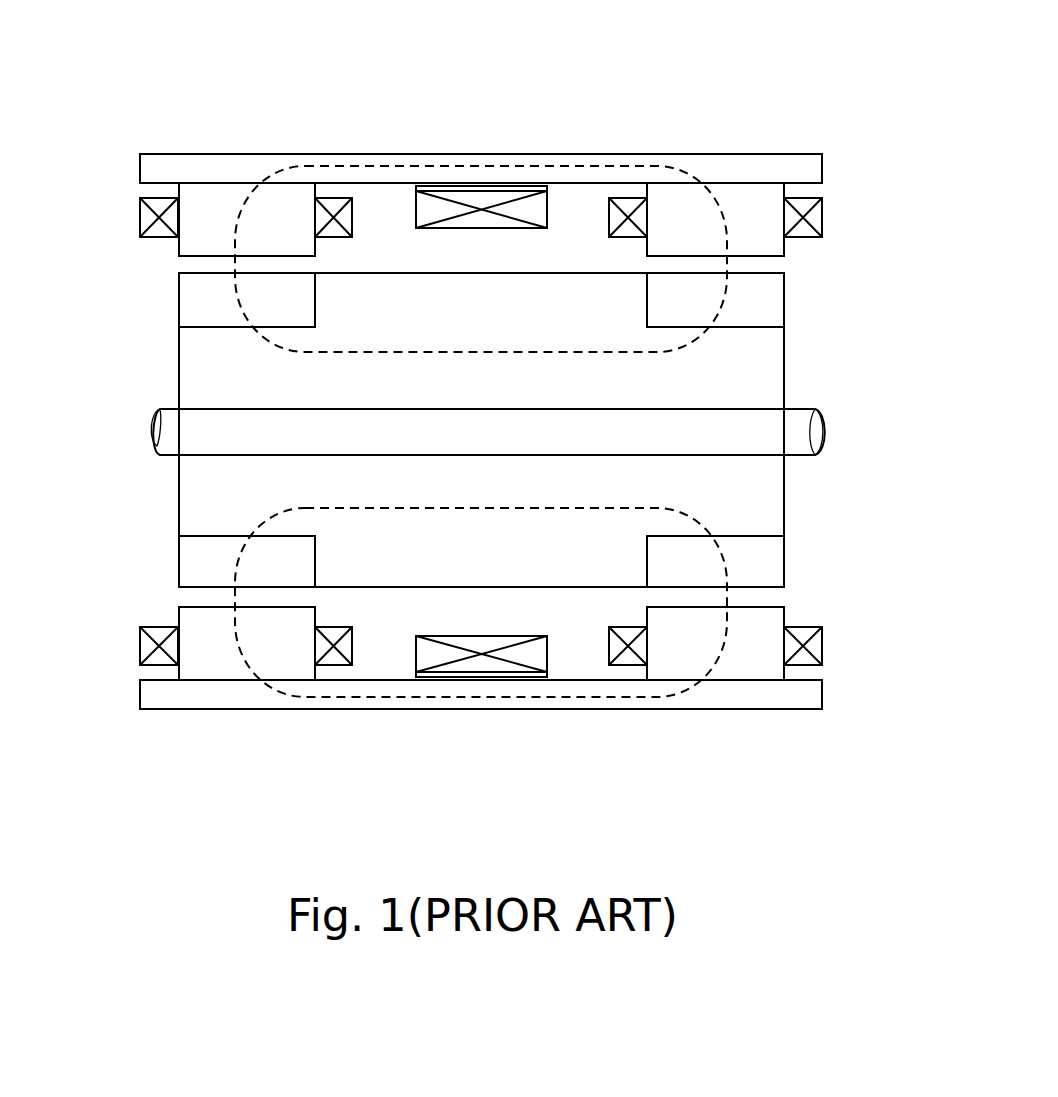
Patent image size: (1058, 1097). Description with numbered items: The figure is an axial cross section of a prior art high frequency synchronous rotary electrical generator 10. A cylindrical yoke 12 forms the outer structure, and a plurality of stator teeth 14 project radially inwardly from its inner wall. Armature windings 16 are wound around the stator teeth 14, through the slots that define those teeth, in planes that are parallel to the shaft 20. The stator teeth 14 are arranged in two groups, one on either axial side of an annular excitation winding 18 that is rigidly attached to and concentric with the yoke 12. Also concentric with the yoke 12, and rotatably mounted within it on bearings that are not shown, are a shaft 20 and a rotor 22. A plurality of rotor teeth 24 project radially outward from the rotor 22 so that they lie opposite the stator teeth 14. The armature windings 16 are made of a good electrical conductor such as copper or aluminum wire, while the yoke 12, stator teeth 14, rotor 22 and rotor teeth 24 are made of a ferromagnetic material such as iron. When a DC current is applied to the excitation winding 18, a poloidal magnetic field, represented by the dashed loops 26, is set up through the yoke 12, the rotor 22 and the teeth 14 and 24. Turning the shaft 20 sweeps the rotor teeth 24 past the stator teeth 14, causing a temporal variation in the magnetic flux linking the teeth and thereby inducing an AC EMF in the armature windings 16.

The high frequency synchronous rotary electrical generator 10 is at (762, 86).
The cylindrical yoke 12 is at (813, 175).
The stator teeth 14 is at (267, 235).
The armature windings 16 is at (152, 218).
The annular excitation winding 18 is at (481, 205).
The shaft 20 is at (807, 435).
The rotor 22 is at (719, 389).
The rotor teeth 24 is at (267, 315).
The dashed loops 26 is at (338, 165).